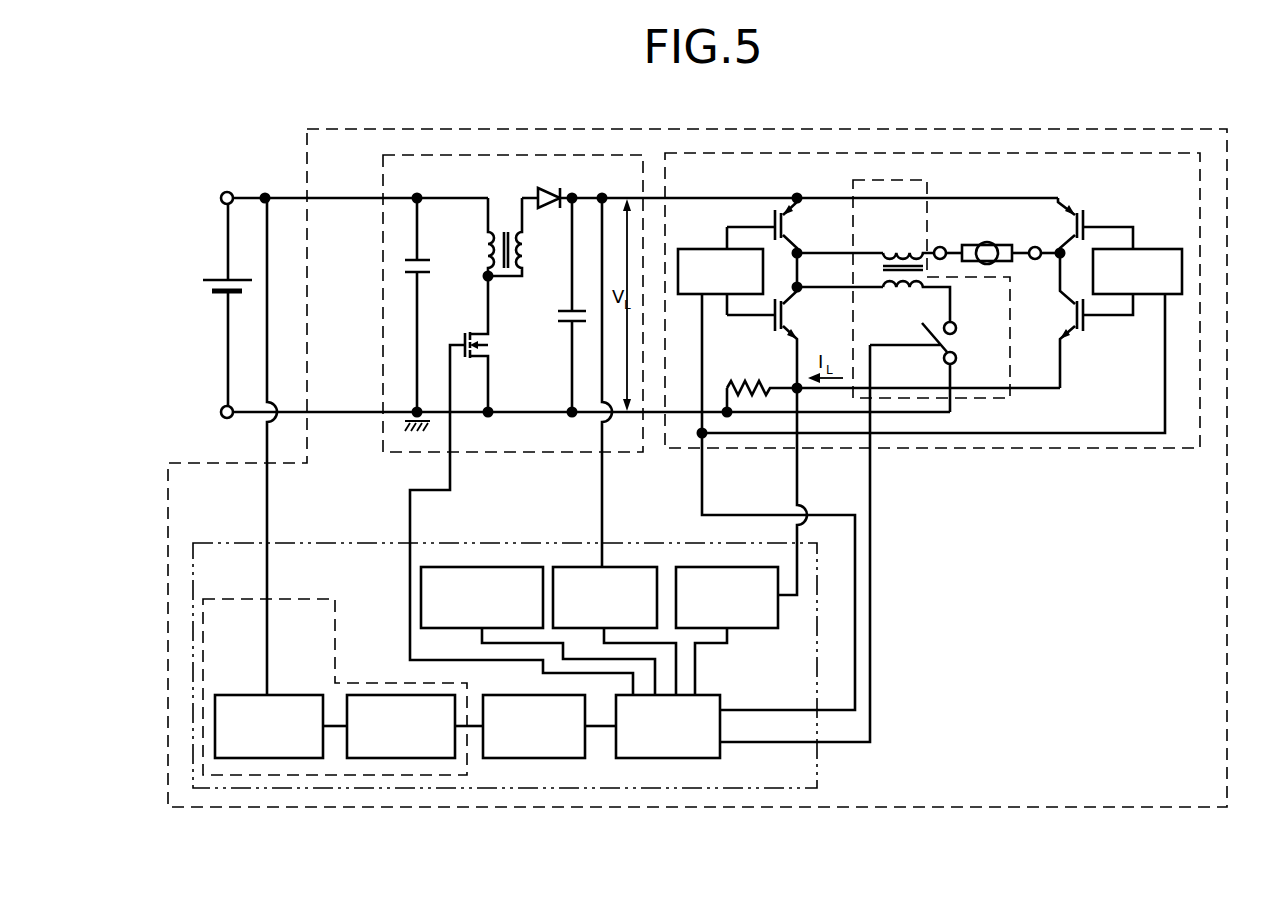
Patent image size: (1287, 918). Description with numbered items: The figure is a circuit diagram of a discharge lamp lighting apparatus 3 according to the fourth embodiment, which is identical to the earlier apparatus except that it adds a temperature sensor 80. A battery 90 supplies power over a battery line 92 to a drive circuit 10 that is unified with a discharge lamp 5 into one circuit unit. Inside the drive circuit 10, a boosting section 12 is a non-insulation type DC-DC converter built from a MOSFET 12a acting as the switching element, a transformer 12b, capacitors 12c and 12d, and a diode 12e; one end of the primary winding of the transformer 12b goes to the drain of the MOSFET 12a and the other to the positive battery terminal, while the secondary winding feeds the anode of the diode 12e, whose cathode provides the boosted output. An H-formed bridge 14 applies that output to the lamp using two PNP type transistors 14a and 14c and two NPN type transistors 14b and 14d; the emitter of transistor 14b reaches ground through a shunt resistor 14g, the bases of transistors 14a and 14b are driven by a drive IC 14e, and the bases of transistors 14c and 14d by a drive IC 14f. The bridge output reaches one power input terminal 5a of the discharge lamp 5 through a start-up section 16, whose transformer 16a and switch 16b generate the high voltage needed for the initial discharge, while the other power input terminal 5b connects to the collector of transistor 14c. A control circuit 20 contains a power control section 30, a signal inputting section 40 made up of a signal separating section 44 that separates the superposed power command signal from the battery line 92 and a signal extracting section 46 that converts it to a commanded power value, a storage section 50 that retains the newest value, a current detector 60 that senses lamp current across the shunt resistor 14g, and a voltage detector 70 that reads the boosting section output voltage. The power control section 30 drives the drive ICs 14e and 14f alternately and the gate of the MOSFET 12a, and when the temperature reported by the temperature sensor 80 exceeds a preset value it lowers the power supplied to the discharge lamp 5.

The discharge lamp lighting apparatus 3 is at (238, 152).
The drive circuit 10 is at (1158, 128).
The boosting section 12 is at (428, 155).
The MOSFET 12a is at (470, 333).
The transformer 12b is at (490, 240).
The capacitor 12c is at (405, 260).
The capacitor 12d is at (558, 321).
The diode 12e is at (543, 188).
The H-formed bridge 14 is at (760, 153).
The PNP type transistor 14a is at (774, 218).
The NPN type transistor 14b is at (773, 327).
The PNP type transistor 14c is at (1086, 220).
The NPN type transistor 14d is at (1086, 326).
The drive IC 14e is at (705, 249).
The drive IC 14f is at (1165, 249).
The shunt resistor 14g is at (770, 393).
The start-up section 16 is at (1010, 400).
The transformer 16a is at (898, 248).
The switch 16b is at (956, 362).
The discharge lamp 5 is at (985, 242).
The power input terminal 5a is at (940, 247).
The power input terminal 5b is at (1035, 247).
The control circuit 20 is at (193, 592).
The power control section 30 is at (688, 758).
The signal inputting section 40 is at (227, 776).
The signal separating section 44 is at (290, 758).
The signal extracting section 46 is at (420, 758).
The storage section 50 is at (553, 758).
The current detector 60 is at (697, 566).
The voltage detector 70 is at (572, 566).
The temperature sensor 80 is at (452, 566).
The battery 90 is at (215, 280).
The battery line 92 is at (250, 463).